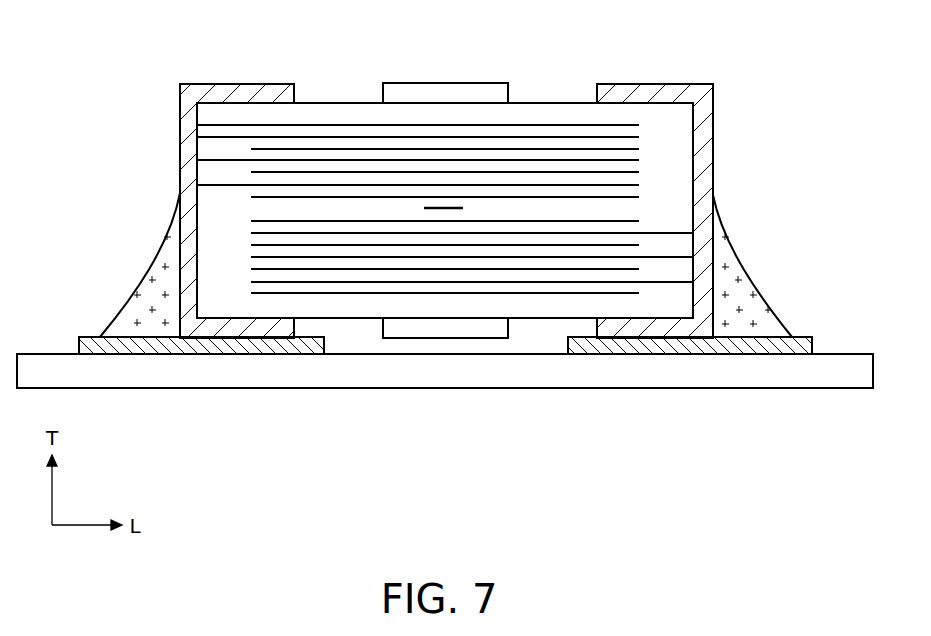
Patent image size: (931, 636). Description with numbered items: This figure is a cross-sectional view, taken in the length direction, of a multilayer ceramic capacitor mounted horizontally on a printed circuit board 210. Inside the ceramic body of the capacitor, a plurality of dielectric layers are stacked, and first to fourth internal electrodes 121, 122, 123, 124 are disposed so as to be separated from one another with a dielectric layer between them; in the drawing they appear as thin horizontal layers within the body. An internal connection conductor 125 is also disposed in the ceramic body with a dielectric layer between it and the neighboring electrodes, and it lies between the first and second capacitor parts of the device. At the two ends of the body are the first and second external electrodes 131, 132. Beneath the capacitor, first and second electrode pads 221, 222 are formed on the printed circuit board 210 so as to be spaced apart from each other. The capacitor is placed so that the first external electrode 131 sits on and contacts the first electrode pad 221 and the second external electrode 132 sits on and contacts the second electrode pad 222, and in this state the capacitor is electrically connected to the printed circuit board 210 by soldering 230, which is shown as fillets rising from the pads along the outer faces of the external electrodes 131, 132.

The first internal electrode 121 is at (303, 124).
The second internal electrode 122 is at (373, 137).
The third internal electrode 123 is at (251, 294).
The fourth internal electrode 124 is at (251, 282).
The internal connection conductor 125 is at (448, 208).
The first external electrode 131 is at (236, 92).
The second external electrode 132 is at (643, 93).
The printed circuit board 210 is at (827, 380).
The first electrode pad 221 is at (90, 338).
The second electrode pad 222 is at (798, 347).
The soldering 230 is at (153, 287).